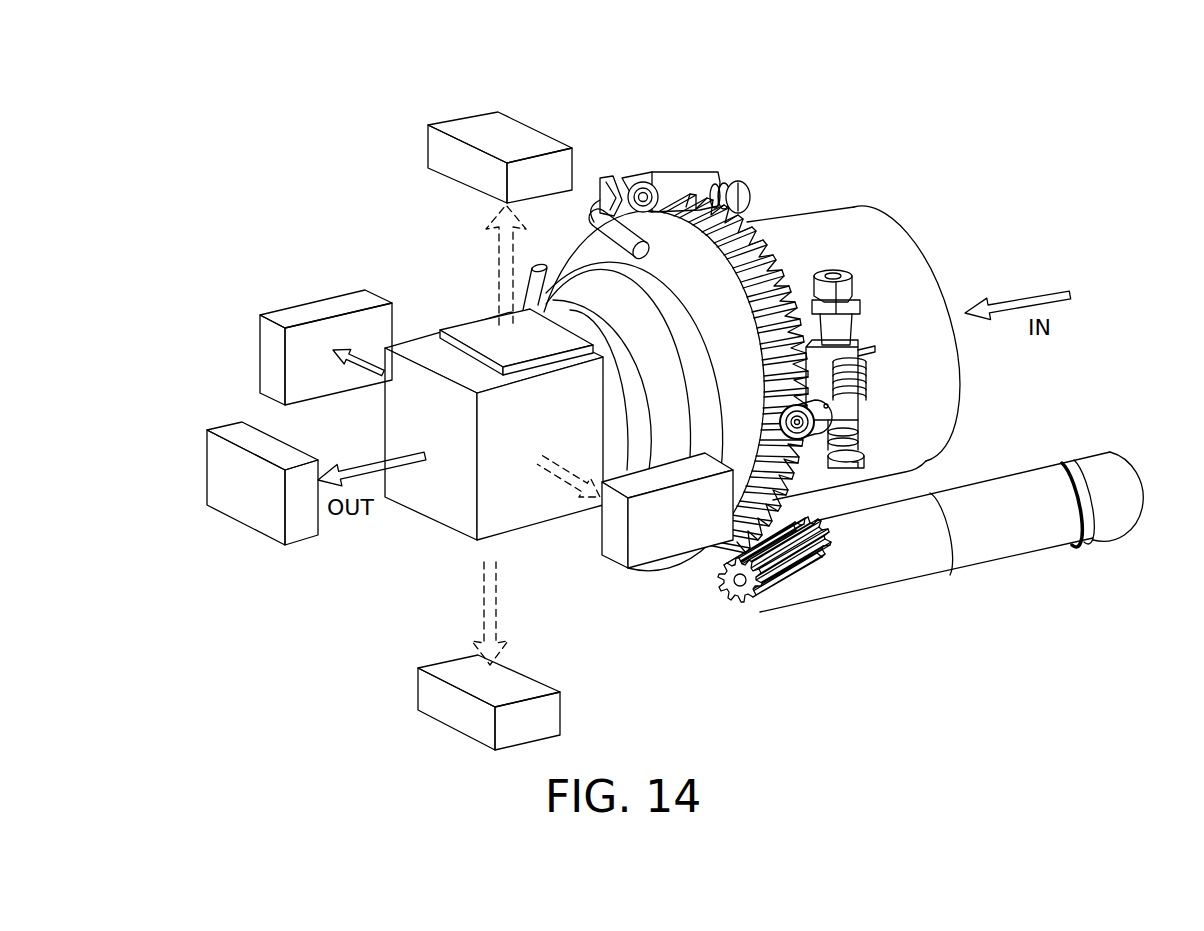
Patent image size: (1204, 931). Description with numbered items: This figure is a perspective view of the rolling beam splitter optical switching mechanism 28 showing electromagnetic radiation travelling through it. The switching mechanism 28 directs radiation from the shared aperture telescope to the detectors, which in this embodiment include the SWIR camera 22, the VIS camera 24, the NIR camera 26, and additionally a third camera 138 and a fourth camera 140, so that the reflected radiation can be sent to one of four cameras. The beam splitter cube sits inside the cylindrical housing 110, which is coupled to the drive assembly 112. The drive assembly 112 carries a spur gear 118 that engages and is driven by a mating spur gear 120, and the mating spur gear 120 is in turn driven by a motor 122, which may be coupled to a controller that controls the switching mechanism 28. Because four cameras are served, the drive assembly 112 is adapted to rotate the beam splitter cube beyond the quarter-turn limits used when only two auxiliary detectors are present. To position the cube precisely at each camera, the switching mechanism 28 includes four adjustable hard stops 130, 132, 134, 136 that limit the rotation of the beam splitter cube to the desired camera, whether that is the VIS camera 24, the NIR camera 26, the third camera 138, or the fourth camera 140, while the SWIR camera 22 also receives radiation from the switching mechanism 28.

The short-wave infrared (SWIR) camera 22 is at (238, 497).
The visible (VIS) camera 24 is at (450, 668).
The near infrared (NIR) camera 26 is at (300, 312).
The rolling beam splitter optical switching mechanism 28 is at (868, 153).
The cylindrical housing 110 is at (778, 502).
The drive assembly 112 is at (940, 593).
The spur gear 118 is at (765, 285).
The mating spur gear 120 is at (780, 605).
The motor 122 is at (1115, 527).
The stop 130 is at (540, 282).
The stop 132 is at (842, 416).
The stop 134 is at (692, 185).
The stop 136 is at (596, 212).
The third camera 138 is at (508, 125).
The fourth camera 140 is at (600, 553).